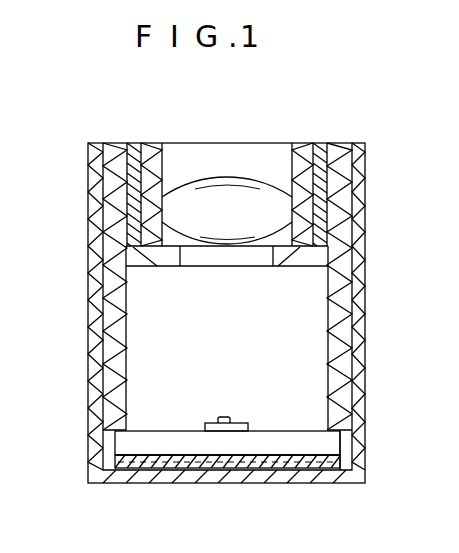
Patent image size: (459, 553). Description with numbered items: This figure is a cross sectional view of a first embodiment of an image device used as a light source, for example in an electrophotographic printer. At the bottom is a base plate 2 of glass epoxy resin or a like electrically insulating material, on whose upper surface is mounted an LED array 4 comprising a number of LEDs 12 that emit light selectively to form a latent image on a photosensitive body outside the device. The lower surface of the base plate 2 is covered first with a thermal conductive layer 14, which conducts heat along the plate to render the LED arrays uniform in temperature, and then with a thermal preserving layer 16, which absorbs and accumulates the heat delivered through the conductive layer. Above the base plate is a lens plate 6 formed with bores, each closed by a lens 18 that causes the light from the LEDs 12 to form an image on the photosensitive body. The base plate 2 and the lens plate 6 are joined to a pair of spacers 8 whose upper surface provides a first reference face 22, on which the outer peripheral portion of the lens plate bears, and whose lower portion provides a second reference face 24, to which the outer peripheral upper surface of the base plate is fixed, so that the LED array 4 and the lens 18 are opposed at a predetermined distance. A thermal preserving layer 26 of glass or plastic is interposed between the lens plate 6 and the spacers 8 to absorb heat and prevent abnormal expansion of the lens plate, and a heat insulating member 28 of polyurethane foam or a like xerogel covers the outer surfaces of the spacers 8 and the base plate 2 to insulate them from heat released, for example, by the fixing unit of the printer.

The base plate 2 is at (247, 440).
The LED array 4 is at (215, 422).
The lens plate 6 is at (302, 152).
The spacer 8 is at (340, 333).
The LED 12 is at (230, 418).
The thermal conductive layer 14 is at (173, 453).
The thermal preserving layer 16 is at (315, 465).
The lens 18 is at (222, 203).
The first reference face 22 is at (287, 262).
The second reference face 24 is at (333, 422).
The thermal preserving layer 26 is at (318, 152).
The heat insulating member 28 is at (95, 420).